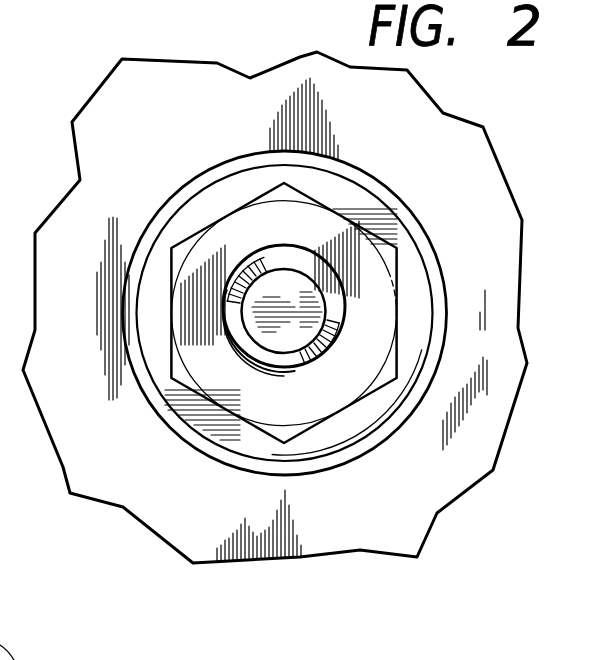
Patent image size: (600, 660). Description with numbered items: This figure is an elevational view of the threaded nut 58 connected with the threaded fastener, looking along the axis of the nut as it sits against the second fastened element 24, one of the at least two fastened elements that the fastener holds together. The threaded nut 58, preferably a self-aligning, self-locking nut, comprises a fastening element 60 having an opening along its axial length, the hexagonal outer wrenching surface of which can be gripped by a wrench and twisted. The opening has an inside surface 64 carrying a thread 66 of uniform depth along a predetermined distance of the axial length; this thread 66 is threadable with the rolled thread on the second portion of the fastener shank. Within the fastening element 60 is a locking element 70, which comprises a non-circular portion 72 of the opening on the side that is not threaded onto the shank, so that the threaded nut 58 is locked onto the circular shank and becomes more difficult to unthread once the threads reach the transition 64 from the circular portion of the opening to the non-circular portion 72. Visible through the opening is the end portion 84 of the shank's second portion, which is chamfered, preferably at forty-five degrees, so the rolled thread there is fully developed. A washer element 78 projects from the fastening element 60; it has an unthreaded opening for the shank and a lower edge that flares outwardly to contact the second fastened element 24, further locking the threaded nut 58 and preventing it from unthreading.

The second fastened element 24 is at (202, 542).
The threaded nut 58 is at (360, 460).
The locking element 70 is at (213, 213).
The washer element 78 is at (327, 457).
The fastening element 60 is at (240, 390).
The inside surface 64 is at (243, 383).
The thread 66 is at (348, 314).
The end portion 84 is at (323, 283).
The non-circular portion 72 is at (287, 246).